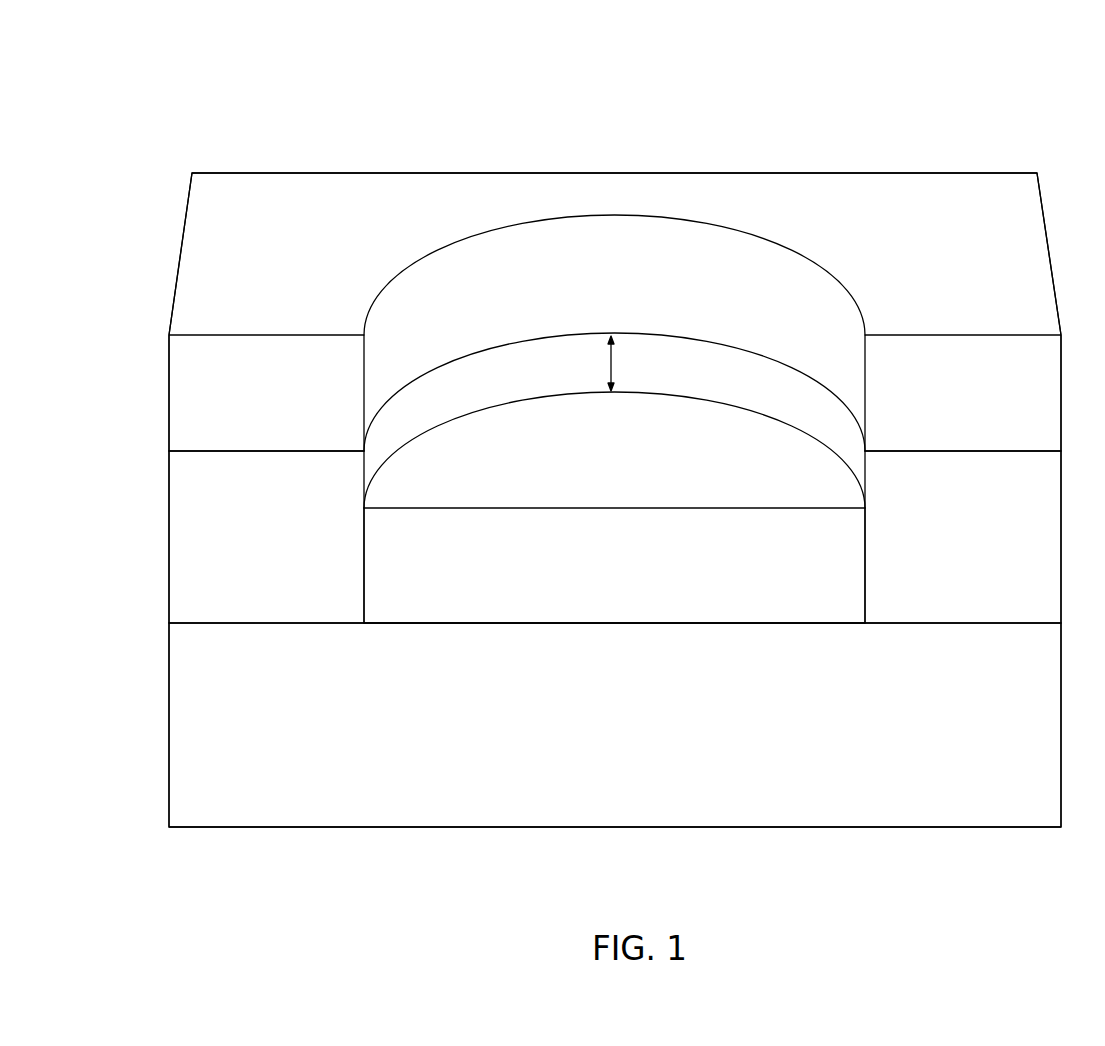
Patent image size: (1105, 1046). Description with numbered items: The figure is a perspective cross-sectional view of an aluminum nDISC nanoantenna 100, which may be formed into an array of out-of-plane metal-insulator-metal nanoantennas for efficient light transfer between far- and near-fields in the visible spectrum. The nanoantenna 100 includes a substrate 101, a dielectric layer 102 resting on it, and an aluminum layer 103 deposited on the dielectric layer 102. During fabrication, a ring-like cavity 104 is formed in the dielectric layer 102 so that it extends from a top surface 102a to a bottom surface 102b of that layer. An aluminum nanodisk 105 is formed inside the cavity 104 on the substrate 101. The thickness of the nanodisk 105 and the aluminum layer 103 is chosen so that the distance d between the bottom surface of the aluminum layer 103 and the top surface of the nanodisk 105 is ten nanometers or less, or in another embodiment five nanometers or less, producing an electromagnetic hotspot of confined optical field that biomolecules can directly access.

The aluminum nDISC nanoantenna 100 is at (129, 100).
The substrate 101 is at (195, 777).
The dielectric layer 102 is at (195, 573).
The top surface of the dielectric layer 102a is at (272, 453).
The bottom surface of the dielectric layer 102b is at (264, 623).
The aluminum layer 103 is at (195, 392).
The ring-like cavity 104 is at (533, 344).
The aluminum nanodisk 105 is at (510, 603).